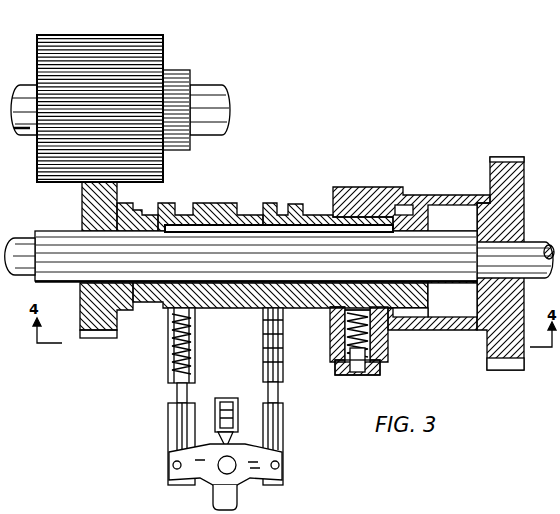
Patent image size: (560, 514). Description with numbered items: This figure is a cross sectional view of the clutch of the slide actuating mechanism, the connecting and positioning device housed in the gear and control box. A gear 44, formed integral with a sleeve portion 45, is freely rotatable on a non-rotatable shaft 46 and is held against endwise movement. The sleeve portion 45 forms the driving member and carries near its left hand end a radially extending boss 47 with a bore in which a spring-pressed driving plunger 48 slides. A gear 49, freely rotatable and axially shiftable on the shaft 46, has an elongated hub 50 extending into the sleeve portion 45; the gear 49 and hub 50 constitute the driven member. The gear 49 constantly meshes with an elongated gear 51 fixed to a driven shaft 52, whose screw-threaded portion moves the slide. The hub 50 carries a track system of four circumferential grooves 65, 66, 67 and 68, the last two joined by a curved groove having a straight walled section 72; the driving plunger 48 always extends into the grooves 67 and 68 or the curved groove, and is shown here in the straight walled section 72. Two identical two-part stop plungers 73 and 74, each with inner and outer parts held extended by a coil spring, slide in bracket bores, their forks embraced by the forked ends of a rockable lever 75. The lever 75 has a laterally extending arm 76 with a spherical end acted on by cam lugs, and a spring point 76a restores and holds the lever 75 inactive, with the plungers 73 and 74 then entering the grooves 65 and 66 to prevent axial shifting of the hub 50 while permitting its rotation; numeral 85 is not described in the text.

The gear 44 is at (505, 364).
The sleeve portion 45 is at (467, 327).
The non-rotatable shaft 46 is at (546, 246).
The radially extending boss 47 is at (384, 361).
The spring-pressed driving plunger 48 is at (337, 313).
The gear 49 is at (106, 340).
The elongated hub 50 is at (241, 213).
The elongated gear 51 is at (165, 59).
The driven shaft 52 is at (221, 96).
The circumferential groove 65 is at (188, 213).
The circumferential groove 66 is at (276, 210).
The circumferential groove 67 is at (329, 310).
The circumferential groove 68 is at (418, 313).
The straight walled section 72 is at (331, 329).
The two-part stop plunger 73 is at (168, 410).
The two-part stop plunger 74 is at (284, 408).
The lever 75 is at (207, 474).
The laterally extending arm 76 is at (240, 488).
The spring point 76a is at (240, 434).
The bushing 85 is at (148, 212).